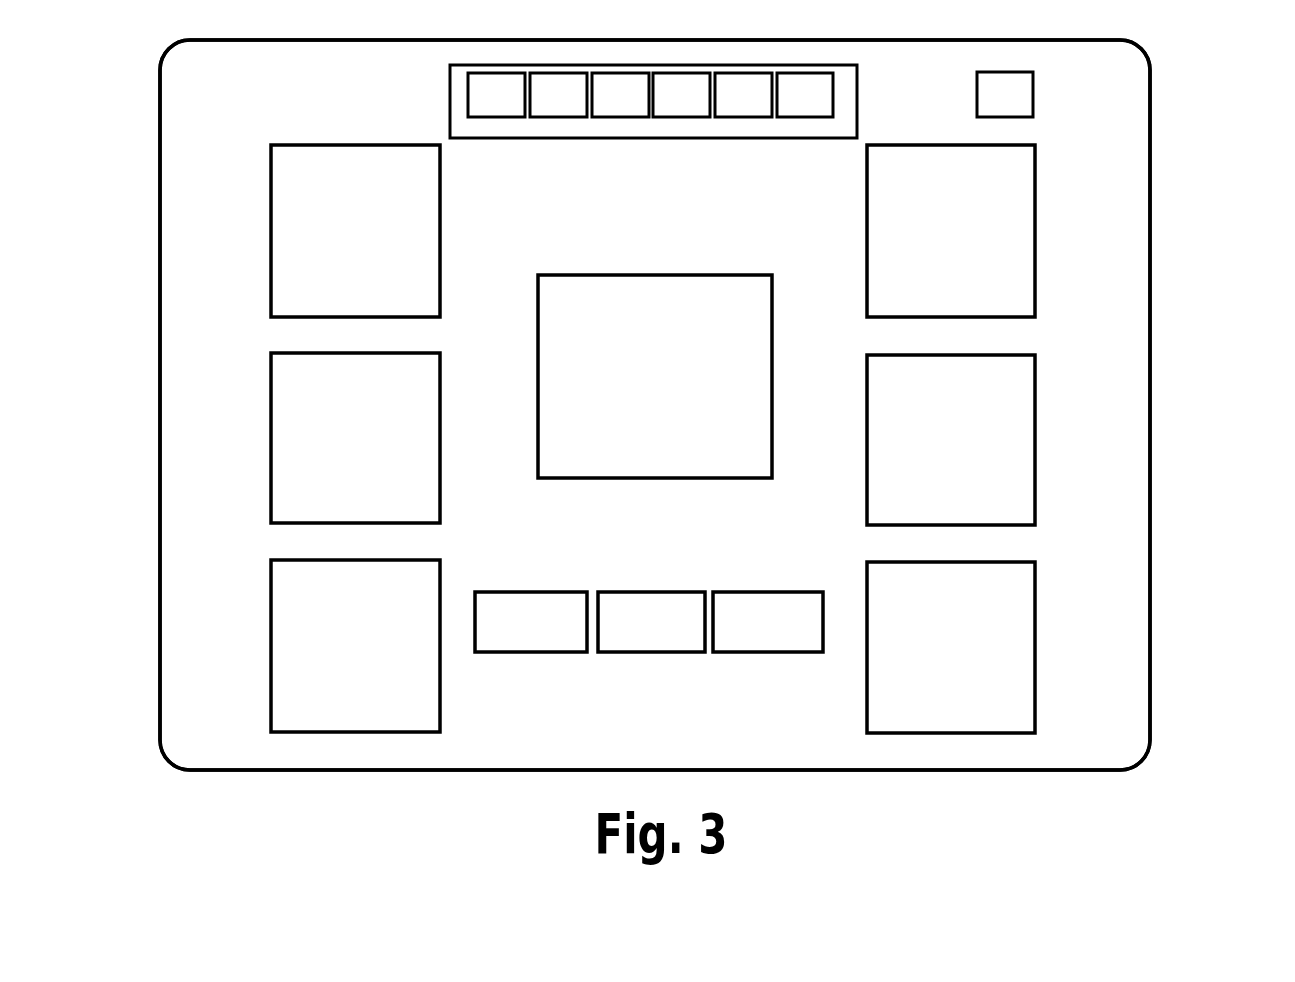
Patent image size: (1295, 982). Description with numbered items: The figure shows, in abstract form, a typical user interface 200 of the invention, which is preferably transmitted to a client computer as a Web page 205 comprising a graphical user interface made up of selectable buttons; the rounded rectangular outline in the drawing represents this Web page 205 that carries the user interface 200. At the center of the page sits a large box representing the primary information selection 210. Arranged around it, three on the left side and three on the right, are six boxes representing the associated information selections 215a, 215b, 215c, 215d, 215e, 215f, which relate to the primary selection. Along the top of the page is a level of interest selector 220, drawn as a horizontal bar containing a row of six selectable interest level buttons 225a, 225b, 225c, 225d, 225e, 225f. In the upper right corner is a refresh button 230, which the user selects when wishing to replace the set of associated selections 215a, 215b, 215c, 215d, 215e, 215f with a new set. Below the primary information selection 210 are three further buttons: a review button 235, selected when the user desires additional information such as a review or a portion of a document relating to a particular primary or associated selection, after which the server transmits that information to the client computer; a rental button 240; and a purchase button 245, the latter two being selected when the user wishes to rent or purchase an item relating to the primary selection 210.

The user interface 200 is at (1170, 522).
The Web page 205 is at (1117, 583).
The primary information selection 210 is at (662, 498).
The associated information selection 215a is at (251, 223).
The associated information selection 215b is at (251, 430).
The associated information selection 215c is at (251, 656).
The associated information selection 215d is at (1058, 225).
The associated information selection 215e is at (1058, 430).
The associated information selection 215f is at (1058, 657).
The level of interest selector 220 is at (432, 103).
The interest level button 225a is at (496, 128).
The interest level button 225b is at (558, 128).
The interest level button 225c is at (620, 128).
The interest level button 225d is at (681, 128).
The interest level button 225e is at (743, 128).
The interest level button 225f is at (805, 128).
The refresh button 230 is at (1058, 93).
The review button 235 is at (528, 667).
The rental button 240 is at (648, 667).
The purchase button 245 is at (770, 667).